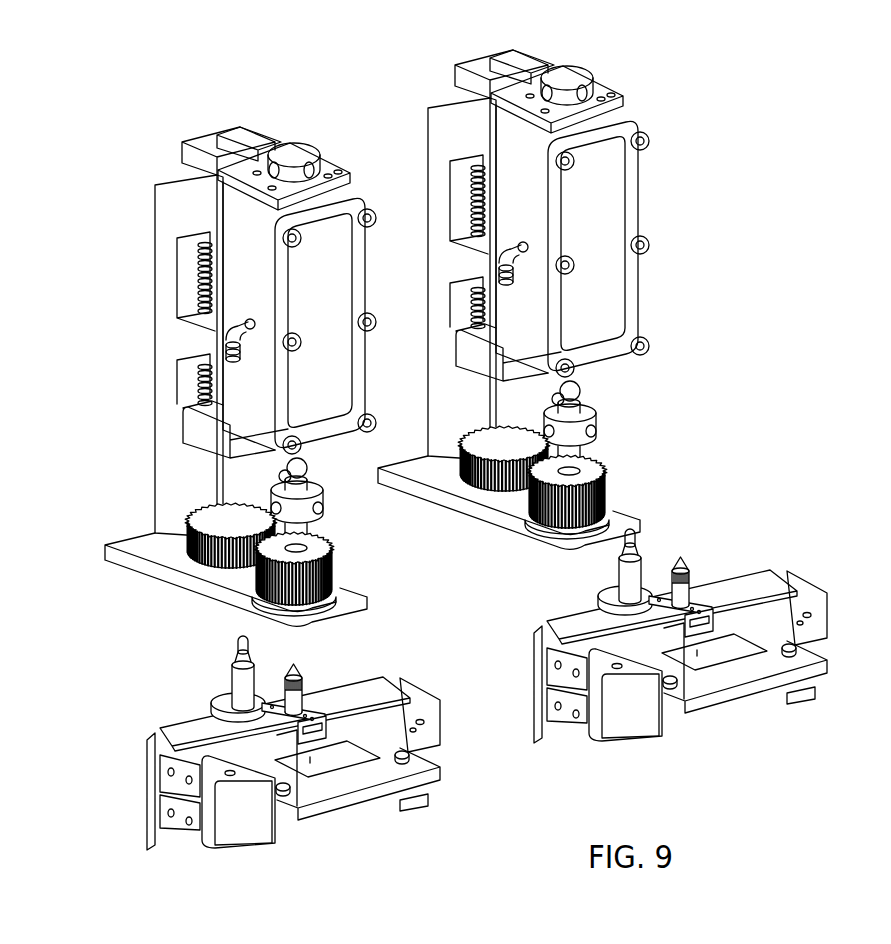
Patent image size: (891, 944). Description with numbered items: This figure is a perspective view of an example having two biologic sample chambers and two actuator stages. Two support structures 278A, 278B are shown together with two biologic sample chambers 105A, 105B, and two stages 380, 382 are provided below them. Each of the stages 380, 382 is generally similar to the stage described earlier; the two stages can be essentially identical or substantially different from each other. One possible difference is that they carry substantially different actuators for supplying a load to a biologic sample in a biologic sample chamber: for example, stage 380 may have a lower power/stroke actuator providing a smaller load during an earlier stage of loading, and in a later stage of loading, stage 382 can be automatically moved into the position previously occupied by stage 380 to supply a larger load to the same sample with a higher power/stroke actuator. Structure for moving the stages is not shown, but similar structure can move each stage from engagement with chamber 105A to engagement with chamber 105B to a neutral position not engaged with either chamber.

The support structure 278A is at (226, 361).
The support structure 278B is at (546, 287).
The biologic sample chamber 105A is at (369, 242).
The biologic sample chamber 105B is at (642, 175).
The stage 380 is at (153, 781).
The stage 382 is at (825, 630).